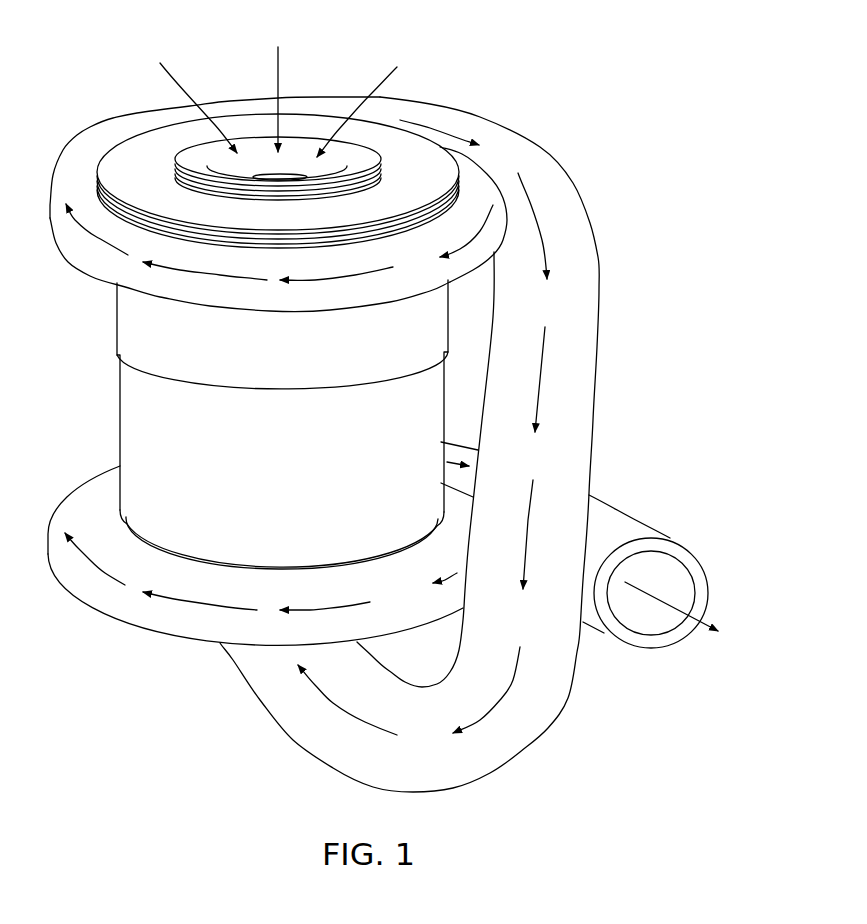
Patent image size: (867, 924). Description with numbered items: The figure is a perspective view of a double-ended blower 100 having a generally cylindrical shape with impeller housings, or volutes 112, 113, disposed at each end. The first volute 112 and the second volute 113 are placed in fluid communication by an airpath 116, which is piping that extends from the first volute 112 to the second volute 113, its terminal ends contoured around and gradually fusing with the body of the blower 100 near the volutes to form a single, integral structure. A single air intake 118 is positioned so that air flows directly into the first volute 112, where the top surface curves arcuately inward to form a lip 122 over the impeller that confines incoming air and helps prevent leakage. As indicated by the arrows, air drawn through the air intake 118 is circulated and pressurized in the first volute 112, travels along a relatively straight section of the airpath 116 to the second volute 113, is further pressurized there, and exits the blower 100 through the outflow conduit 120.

The double-ended blower 100 is at (88, 119).
The first volute 112 is at (84, 252).
The second volute 113 is at (137, 606).
The airpath 116 is at (576, 377).
The air intake 118 is at (290, 177).
The outflow conduit 120 is at (400, 153).
The lip 122 is at (257, 168).